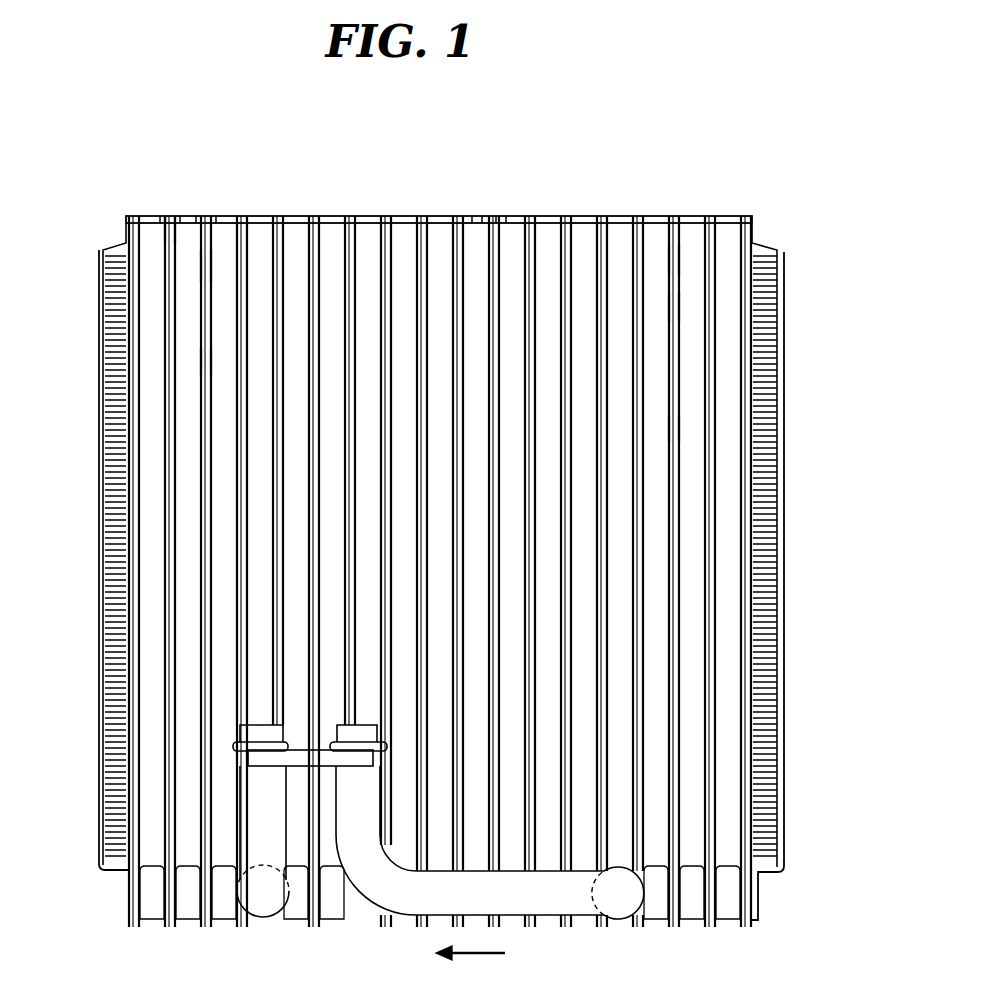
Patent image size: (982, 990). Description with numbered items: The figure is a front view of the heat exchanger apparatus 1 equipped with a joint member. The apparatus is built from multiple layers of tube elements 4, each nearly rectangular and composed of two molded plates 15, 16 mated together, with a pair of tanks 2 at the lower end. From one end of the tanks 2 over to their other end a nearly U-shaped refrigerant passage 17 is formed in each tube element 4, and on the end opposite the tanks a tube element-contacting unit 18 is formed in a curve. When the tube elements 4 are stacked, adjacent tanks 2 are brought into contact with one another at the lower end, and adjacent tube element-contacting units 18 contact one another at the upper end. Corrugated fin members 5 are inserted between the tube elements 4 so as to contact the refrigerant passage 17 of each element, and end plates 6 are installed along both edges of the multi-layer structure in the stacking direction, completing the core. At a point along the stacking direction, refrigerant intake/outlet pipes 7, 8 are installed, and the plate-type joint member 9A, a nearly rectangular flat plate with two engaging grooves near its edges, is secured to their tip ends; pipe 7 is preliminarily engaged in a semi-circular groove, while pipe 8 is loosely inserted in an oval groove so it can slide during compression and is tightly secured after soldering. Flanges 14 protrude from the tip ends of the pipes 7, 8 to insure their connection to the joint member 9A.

The heat exchanger apparatus 1 is at (767, 198).
The tank 2 is at (200, 908).
The tube element 4 is at (197, 322).
The corrugated fin member 5 is at (118, 395).
The end plate 6 is at (100, 519).
The refrigerant intake/outlet pipe 7 is at (257, 828).
The refrigerant intake/outlet pipe 8 is at (548, 903).
The plate-type joint member 9A is at (310, 764).
The flange 14 is at (243, 737).
The molded plate 15 is at (210, 265).
The molded plate 16 is at (162, 217).
The U-shaped refrigerant passage 17 is at (198, 360).
The tube element-contacting unit 18 is at (200, 247).